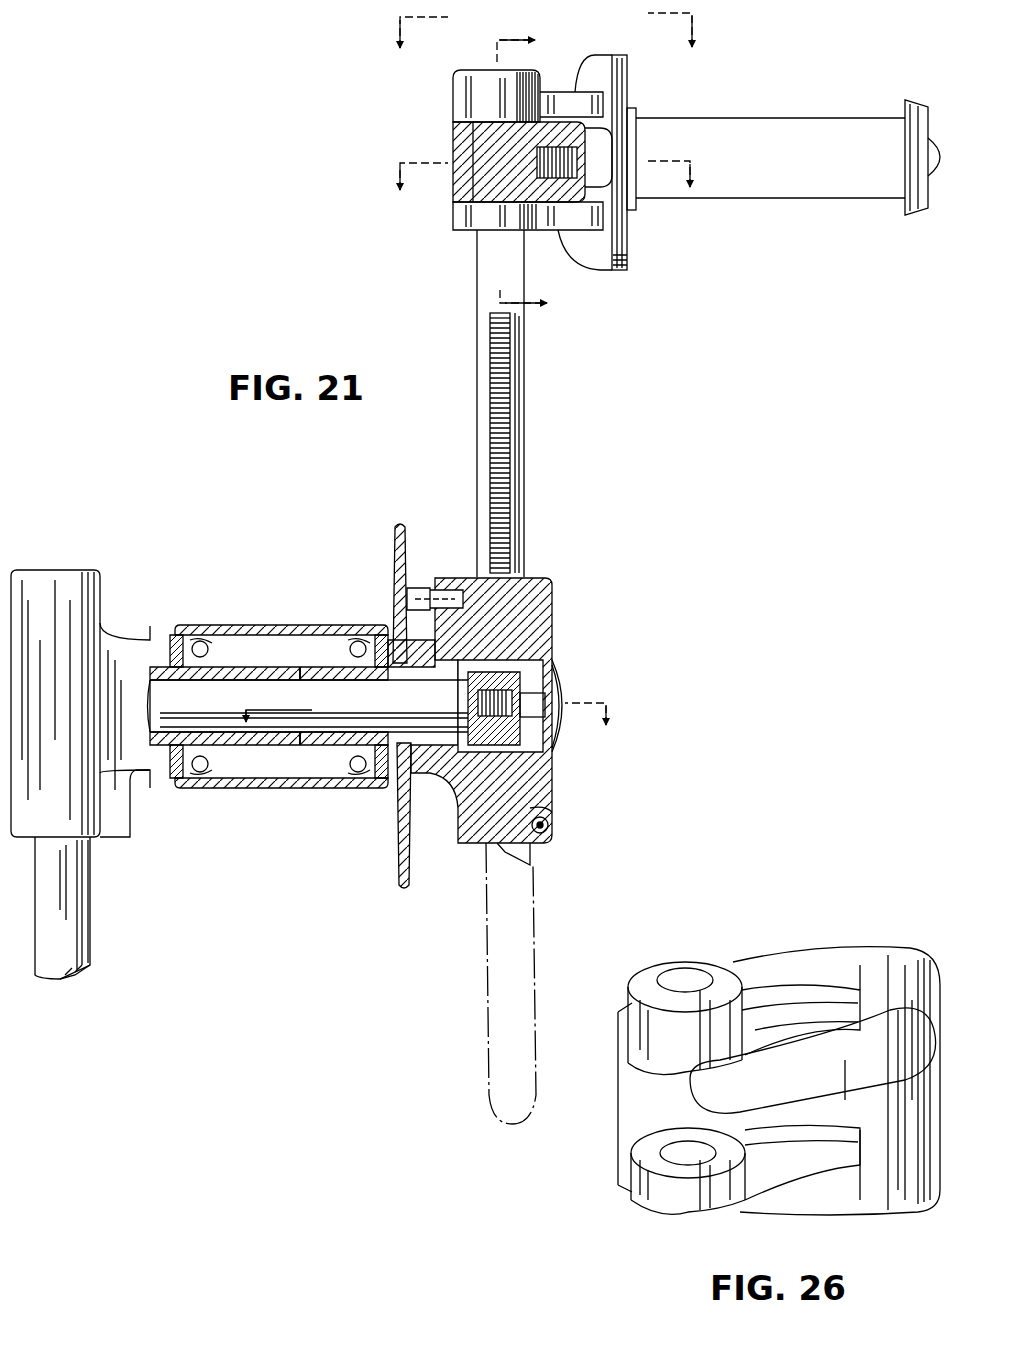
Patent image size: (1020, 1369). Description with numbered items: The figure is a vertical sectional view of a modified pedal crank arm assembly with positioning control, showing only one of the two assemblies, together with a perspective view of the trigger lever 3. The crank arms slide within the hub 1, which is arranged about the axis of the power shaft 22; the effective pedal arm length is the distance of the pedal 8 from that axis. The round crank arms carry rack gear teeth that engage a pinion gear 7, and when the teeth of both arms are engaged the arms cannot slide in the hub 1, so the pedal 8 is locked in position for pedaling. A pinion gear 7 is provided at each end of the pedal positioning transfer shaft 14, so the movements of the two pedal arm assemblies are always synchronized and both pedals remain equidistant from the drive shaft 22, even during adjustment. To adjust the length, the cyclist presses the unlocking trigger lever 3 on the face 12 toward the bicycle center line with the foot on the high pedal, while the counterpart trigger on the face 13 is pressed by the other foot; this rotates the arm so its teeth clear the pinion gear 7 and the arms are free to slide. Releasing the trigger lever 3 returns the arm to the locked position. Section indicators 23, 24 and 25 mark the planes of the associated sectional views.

In FIG. 21, the hub 1 is at (555, 580).
In FIG. 21, the trigger lever 3 is at (594, 62).
In FIG. 26, the trigger lever 3 is at (800, 958).
In FIG. 21, the pinion gear 7 is at (505, 672).
In FIG. 21, the pedal 8 is at (799, 122).
In FIG. 21, the face 12 is at (627, 74).
In FIG. 21, the face 13 is at (627, 256).
In FIG. 21, the pedal positioning transfer shaft 14 is at (337, 725).
In FIG. 21, the power shaft 22 is at (302, 675).
In FIG. 21, the section line 23 is at (546, 164).
In FIG. 21, the section line 24 is at (507, 169).
In FIG. 21, the section line 25 is at (549, 25).